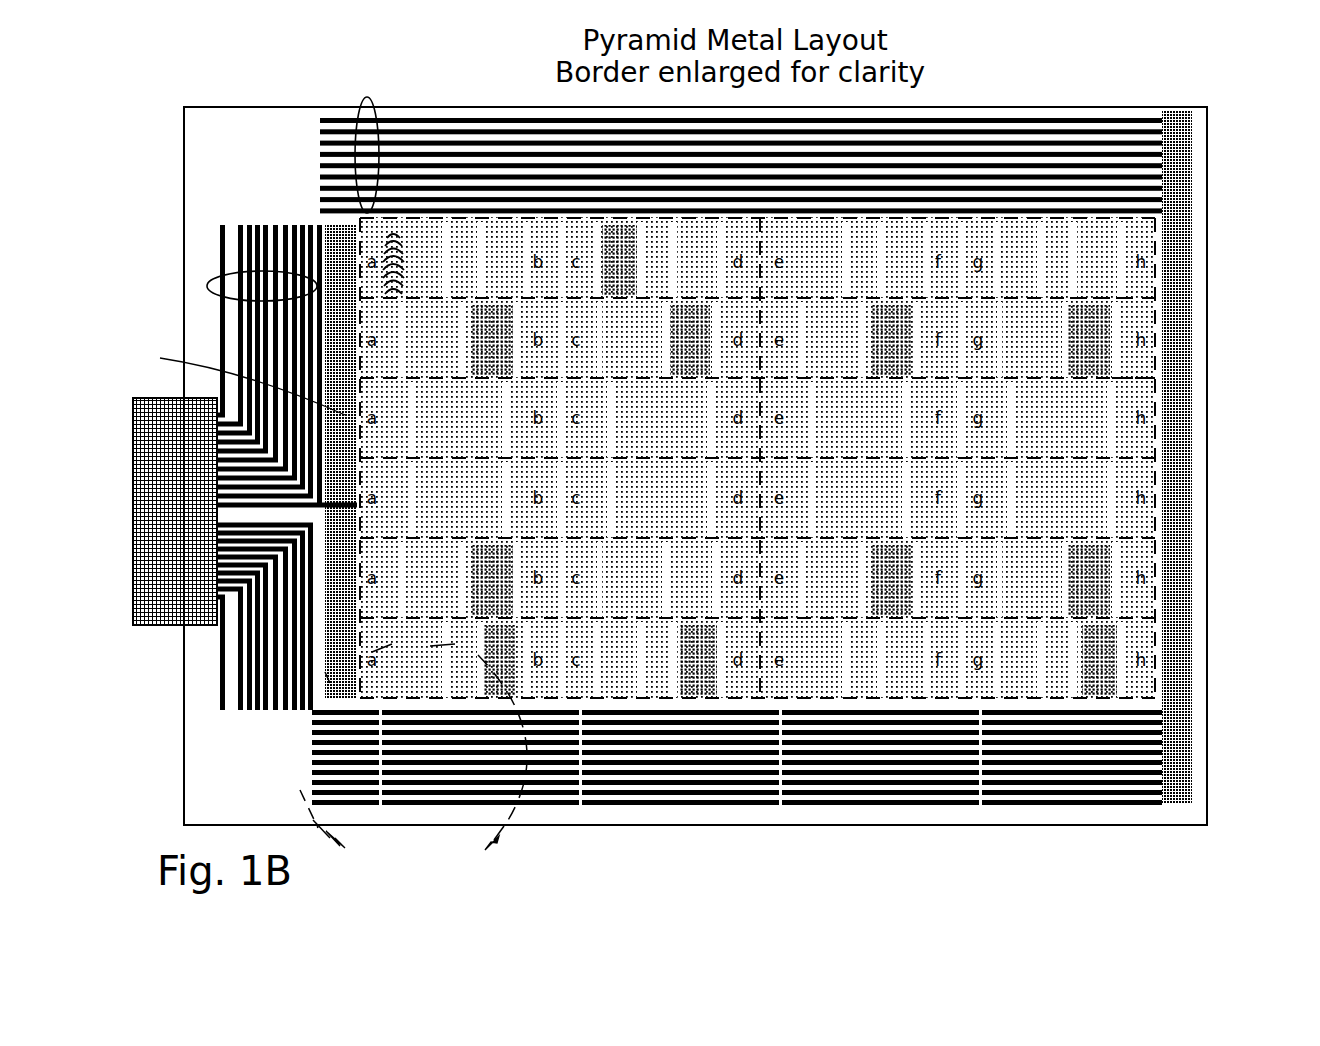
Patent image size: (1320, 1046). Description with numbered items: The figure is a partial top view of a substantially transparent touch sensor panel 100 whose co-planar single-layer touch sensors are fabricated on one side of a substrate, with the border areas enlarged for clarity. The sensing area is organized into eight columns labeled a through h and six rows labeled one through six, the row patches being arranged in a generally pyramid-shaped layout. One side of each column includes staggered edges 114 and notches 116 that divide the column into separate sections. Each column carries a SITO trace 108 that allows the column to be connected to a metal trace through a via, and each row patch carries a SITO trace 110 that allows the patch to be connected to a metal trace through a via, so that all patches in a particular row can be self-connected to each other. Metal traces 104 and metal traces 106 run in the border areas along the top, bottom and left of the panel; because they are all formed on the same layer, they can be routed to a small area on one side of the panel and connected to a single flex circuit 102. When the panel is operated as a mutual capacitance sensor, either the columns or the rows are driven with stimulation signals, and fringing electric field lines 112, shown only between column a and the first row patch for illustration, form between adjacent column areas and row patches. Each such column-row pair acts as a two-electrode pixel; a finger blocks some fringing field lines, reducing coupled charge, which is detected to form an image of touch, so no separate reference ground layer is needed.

The touch sensor panel 100 is at (1208, 180).
The flex circuit 102 is at (195, 628).
The metal traces 104 is at (368, 100).
The metal traces 106 is at (207, 286).
The SITO trace 108 is at (958, 125).
The SITO trace 110 is at (1082, 196).
The electric field lines 112 is at (388, 230).
The staggered edges 114 is at (1120, 322).
The notches 116 is at (1128, 380).